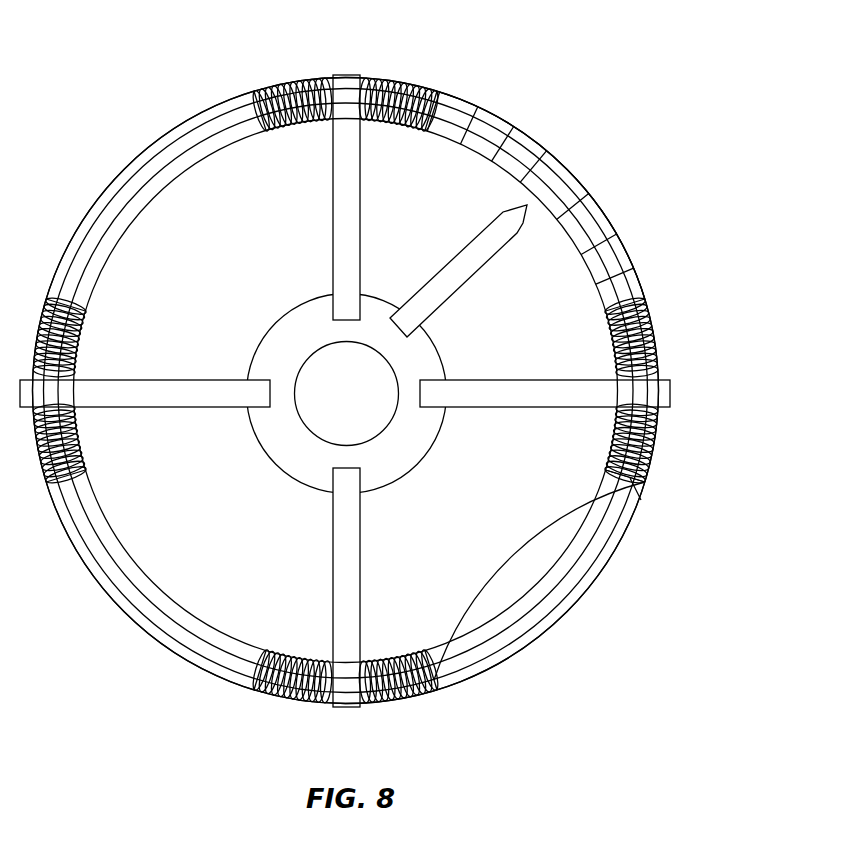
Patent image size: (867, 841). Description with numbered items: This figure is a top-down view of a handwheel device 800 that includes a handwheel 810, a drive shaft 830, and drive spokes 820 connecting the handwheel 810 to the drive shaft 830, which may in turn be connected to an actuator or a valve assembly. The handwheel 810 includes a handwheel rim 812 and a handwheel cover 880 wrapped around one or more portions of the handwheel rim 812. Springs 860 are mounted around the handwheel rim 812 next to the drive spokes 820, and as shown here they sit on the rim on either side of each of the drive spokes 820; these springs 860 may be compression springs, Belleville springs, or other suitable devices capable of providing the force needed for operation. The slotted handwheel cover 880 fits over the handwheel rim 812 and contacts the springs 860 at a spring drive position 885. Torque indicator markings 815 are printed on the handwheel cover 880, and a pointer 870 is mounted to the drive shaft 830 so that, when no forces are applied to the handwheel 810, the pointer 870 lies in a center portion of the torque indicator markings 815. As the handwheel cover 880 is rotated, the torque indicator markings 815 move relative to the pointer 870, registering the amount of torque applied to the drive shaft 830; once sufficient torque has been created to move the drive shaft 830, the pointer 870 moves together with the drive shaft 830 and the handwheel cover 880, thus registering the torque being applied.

The handwheel device 800 is at (643, 117).
The handwheel 810 is at (509, 672).
The handwheel rim 812 is at (560, 598).
The torque indicator markings 815 is at (626, 209).
The drive spokes 820 is at (150, 398).
The drive shaft 830 is at (295, 462).
The springs 860 is at (658, 440).
The pointer 870 is at (480, 258).
The handwheel cover 880 is at (620, 550).
The spring drive position 885 is at (642, 497).